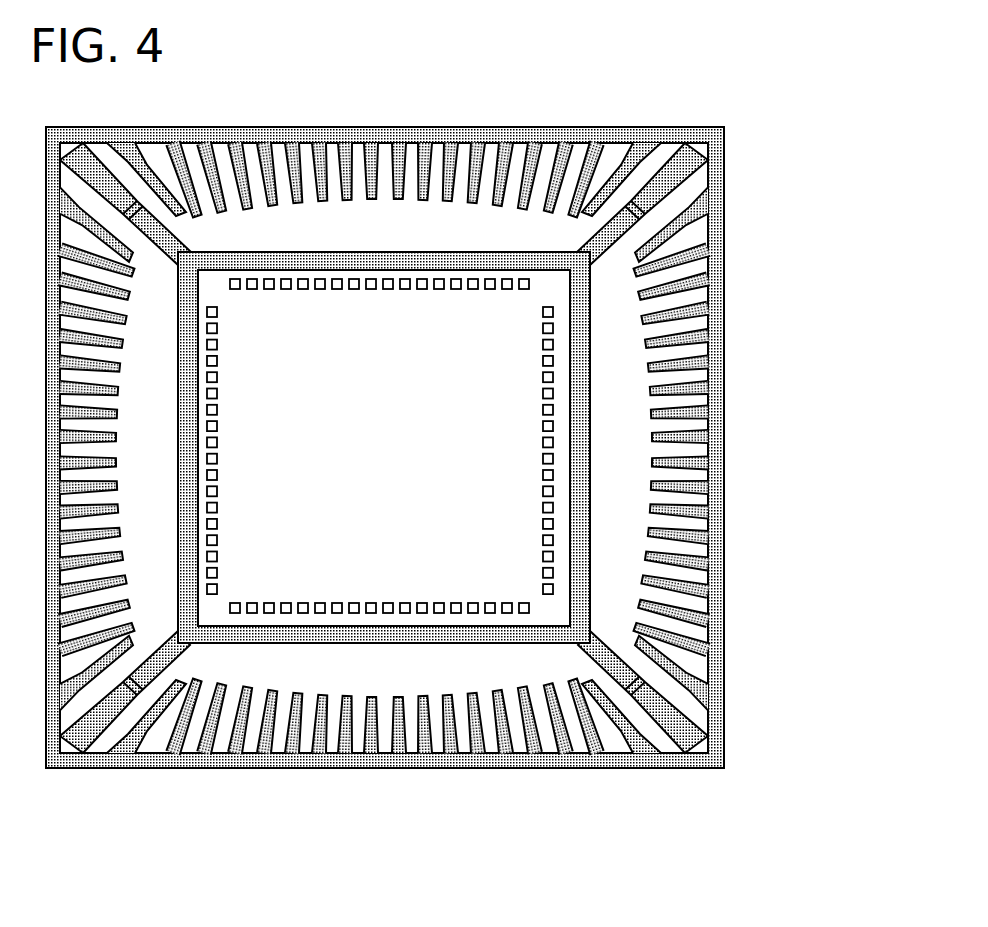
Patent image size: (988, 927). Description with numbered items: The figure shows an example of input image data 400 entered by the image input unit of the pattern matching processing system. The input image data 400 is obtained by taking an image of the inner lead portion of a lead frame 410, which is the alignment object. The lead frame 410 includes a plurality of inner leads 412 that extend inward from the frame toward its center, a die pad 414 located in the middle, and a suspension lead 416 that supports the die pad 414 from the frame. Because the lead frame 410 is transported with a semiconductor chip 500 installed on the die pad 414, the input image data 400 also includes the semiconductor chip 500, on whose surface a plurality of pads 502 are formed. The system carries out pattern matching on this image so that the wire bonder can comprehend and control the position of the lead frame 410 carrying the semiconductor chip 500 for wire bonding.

The input image data 400 is at (848, 822).
The lead frame 410 is at (483, 447).
The inner leads 412 is at (685, 458).
The die pad 414 is at (536, 444).
The suspension lead 416 is at (655, 188).
The semiconductor chip 500 is at (537, 436).
The pads 502 is at (546, 398).